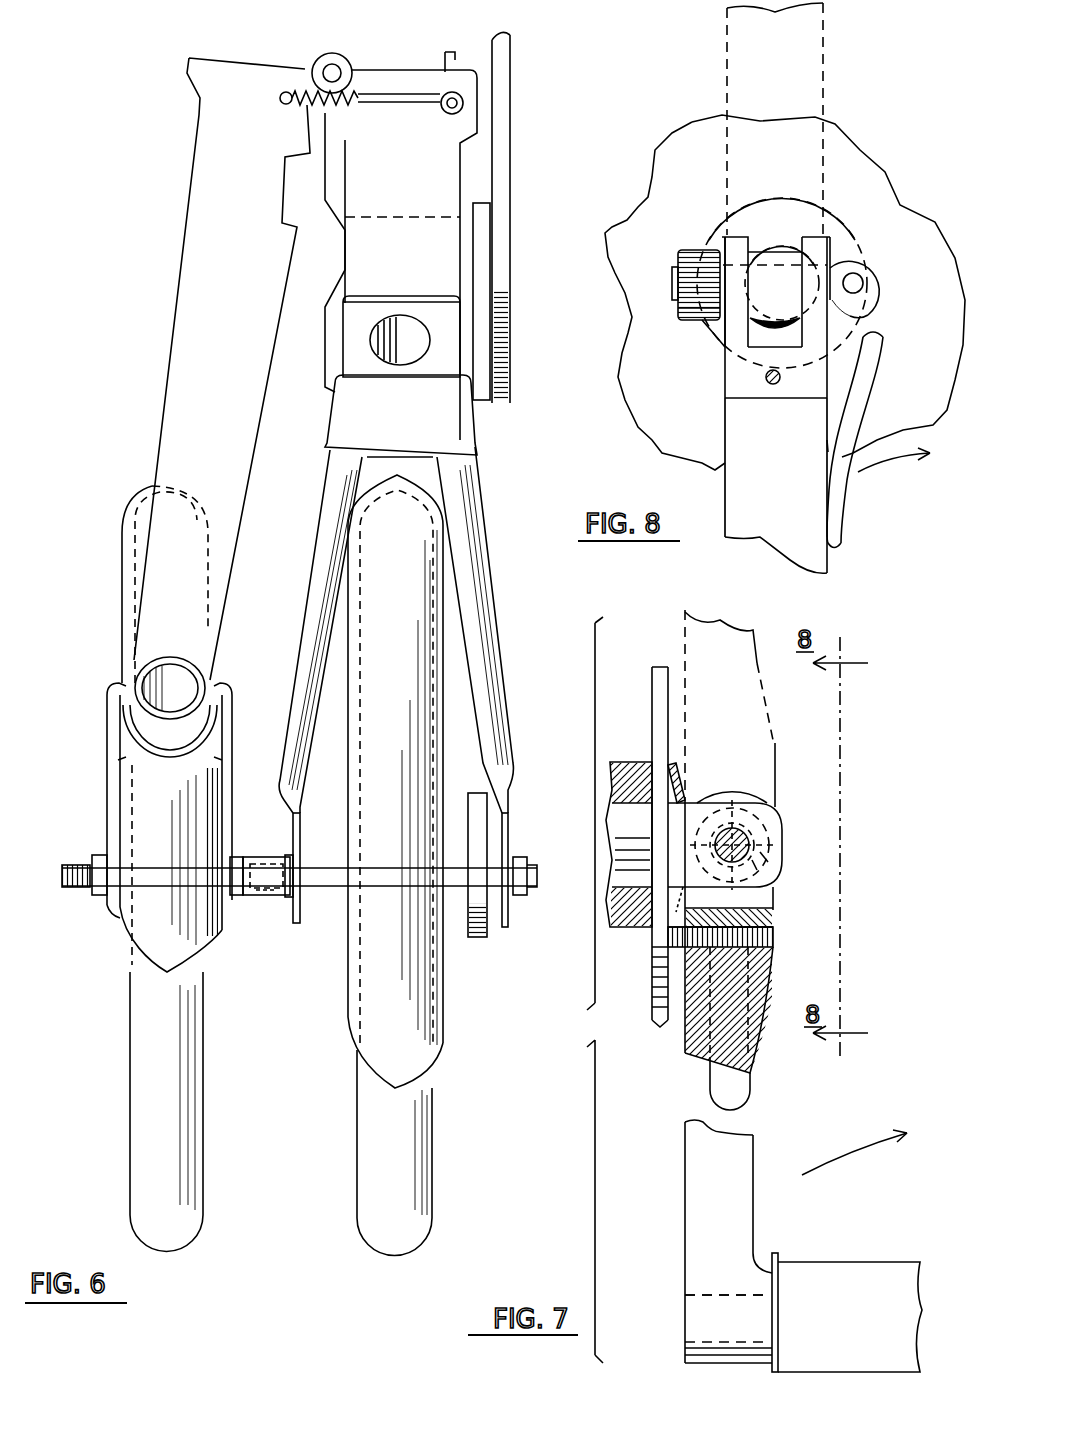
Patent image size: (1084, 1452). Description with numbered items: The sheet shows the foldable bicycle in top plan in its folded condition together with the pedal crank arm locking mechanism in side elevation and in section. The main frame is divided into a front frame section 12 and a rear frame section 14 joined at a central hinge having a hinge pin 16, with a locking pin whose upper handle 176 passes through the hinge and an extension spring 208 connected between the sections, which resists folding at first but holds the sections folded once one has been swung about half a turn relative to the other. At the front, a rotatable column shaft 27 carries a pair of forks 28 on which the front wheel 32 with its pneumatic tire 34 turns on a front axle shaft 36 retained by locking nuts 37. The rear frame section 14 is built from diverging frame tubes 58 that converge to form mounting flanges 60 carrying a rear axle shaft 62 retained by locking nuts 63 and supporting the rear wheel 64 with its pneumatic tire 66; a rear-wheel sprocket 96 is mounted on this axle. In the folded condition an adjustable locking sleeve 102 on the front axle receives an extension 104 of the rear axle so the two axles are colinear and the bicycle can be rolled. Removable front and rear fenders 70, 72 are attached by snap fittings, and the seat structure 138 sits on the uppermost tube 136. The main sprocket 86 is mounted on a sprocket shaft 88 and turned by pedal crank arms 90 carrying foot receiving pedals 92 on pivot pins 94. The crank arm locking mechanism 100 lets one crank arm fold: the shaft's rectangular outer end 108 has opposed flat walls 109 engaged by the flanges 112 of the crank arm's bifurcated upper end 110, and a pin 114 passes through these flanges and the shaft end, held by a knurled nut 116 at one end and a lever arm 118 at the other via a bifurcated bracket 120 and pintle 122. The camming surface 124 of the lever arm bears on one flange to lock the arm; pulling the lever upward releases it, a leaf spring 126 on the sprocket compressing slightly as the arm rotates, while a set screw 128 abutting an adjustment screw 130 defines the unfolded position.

In FIG. 6, the front frame section 12 is at (172, 240).
In FIG. 6, the rear frame section 14 is at (497, 512).
In FIG. 6, the hinge pin 16 is at (335, 72).
In FIG. 6, the column shaft 27 is at (157, 737).
In FIG. 6, the forks 28 is at (110, 765).
In FIG. 6, the wheel 32 is at (195, 1020).
In FIG. 6, the pneumatic tire 34 is at (180, 1228).
In FIG. 6, the front axle shaft 36 is at (68, 862).
In FIG. 6, the locking nuts 37 is at (98, 897).
In FIG. 6, the frame tubes 58 is at (325, 530).
In FIG. 6, the mounting flanges 60 is at (297, 925).
In FIG. 6, the rear axle shaft 62 is at (317, 880).
In FIG. 6, the locking nuts 63 is at (520, 855).
In FIG. 6, the rear wheel 64 is at (410, 1118).
In FIG. 6, the pneumatic tire 66 is at (410, 1228).
In FIG. 6, the front fender 70 is at (128, 515).
In FIG. 6, the rear fender 72 is at (370, 1042).
In FIG. 6, the sprocket 86 is at (480, 372).
In FIG. 8, the sprocket 86 is at (700, 137).
In FIG. 7, the sprocket 86 is at (658, 668).
In FIG. 8, the sprocket shaft 88 is at (770, 240).
In FIG. 7, the sprocket shaft 88 is at (618, 885).
In FIG. 6, the pedal crank arms 90 is at (507, 127).
In FIG. 8, the pedal crank arms 90 is at (830, 68).
In FIG. 7, the pedal crank arms 90 is at (765, 958).
In FIG. 7, the foot receiving pedals 92 is at (870, 1270).
In FIG. 7, the pivot pins 94 is at (710, 1305).
In FIG. 6, the rear-wheel sprocket 96 is at (478, 937).
In FIG. 8, the crank arm locking mechanism 100 is at (705, 367).
In FIG. 6, the adjustable locking sleeve 102 is at (265, 857).
In FIG. 6, the extension 104 is at (270, 895).
In FIG. 8, the outer end 108 is at (767, 253).
In FIG. 7, the outer end 108 is at (628, 762).
In FIG. 8, the flat walls 109 is at (712, 343).
In FIG. 7, the flat walls 109 is at (700, 803).
In FIG. 8, the bifurcated upper end 110 is at (700, 342).
In FIG. 8, the flanges 112 is at (735, 240).
In FIG. 7, the flanges 112 is at (745, 790).
In FIG. 8, the pin 114 is at (672, 280).
In FIG. 7, the pin 114 is at (748, 842).
In FIG. 8, the knurled nut 116 is at (693, 252).
In FIG. 8, the lever arm 118 is at (840, 520).
In FIG. 7, the lever arm 118 is at (745, 1083).
In FIG. 8, the bifurcated bracket 120 is at (878, 310).
In FIG. 8, the pintle 122 is at (865, 283).
In FIG. 7, the pintle 122 is at (780, 858).
In FIG. 8, the camming surface 124 is at (850, 258).
In FIG. 7, the leaf spring 126 is at (680, 775).
In FIG. 8, the set screw 128 is at (780, 383).
In FIG. 7, the set screw 128 is at (776, 935).
In FIG. 7, the adjustment screw 130 is at (672, 937).
In FIG. 6, the uppermost tube 136 is at (400, 323).
In FIG. 6, the seat structure 138 is at (437, 250).
In FIG. 6, the upper handle 176 is at (412, 100).
In FIG. 6, the extension spring 208 is at (300, 110).